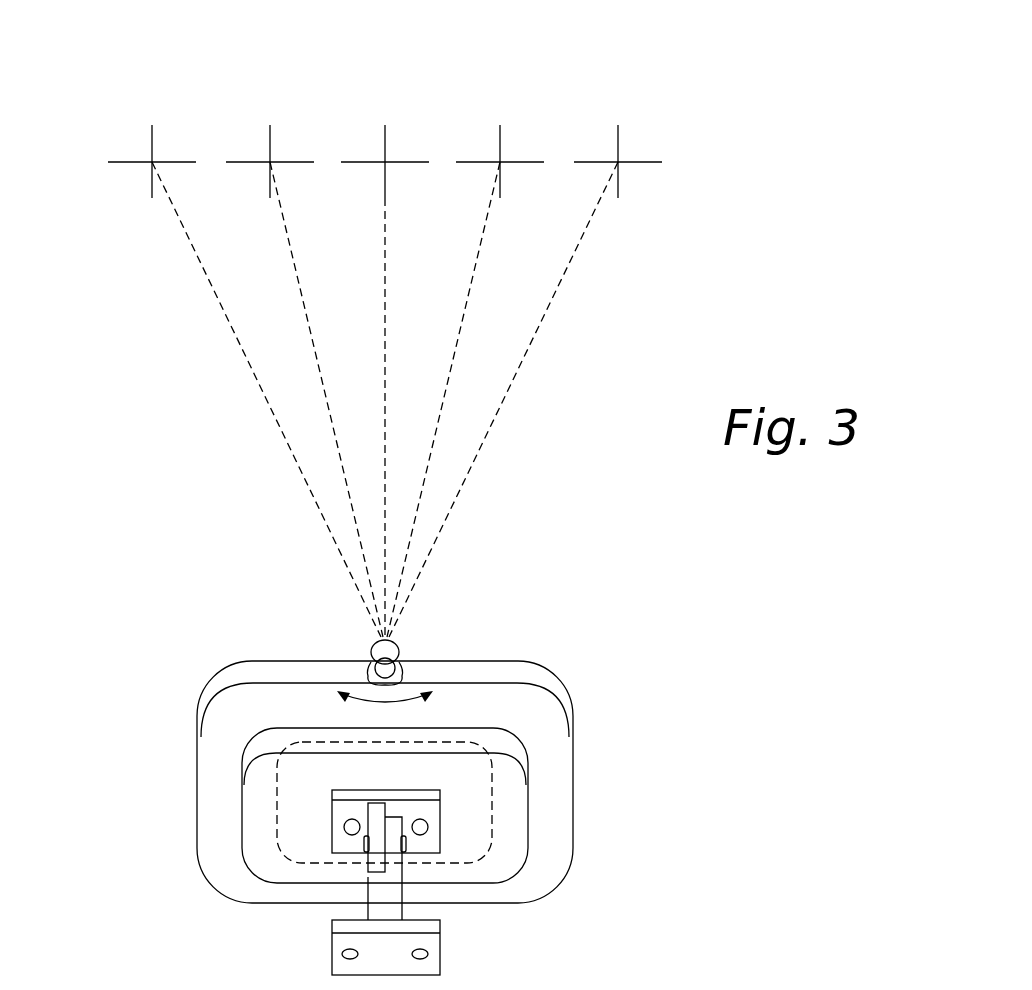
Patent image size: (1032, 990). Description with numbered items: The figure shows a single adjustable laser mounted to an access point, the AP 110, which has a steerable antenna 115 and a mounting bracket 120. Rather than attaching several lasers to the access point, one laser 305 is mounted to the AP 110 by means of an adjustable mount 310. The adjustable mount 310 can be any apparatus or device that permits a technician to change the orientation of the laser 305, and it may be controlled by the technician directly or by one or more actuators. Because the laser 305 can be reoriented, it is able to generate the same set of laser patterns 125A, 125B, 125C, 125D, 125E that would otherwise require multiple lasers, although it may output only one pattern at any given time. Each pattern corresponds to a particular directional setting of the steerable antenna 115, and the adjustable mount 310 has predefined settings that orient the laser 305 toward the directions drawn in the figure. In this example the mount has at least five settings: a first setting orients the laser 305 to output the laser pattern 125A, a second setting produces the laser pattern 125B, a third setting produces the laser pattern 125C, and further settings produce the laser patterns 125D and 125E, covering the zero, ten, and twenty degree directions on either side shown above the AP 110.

The AP 110 is at (573, 741).
The steerable antenna 115 is at (492, 820).
The mounting bracket 120 is at (440, 947).
The laser pattern 125A is at (618, 94).
The laser pattern 125B is at (500, 94).
The laser pattern 125C is at (385, 94).
The laser pattern 125D is at (270, 94).
The laser pattern 125E is at (152, 94).
The laser 305 is at (397, 645).
The adjustable mount 310 is at (363, 670).